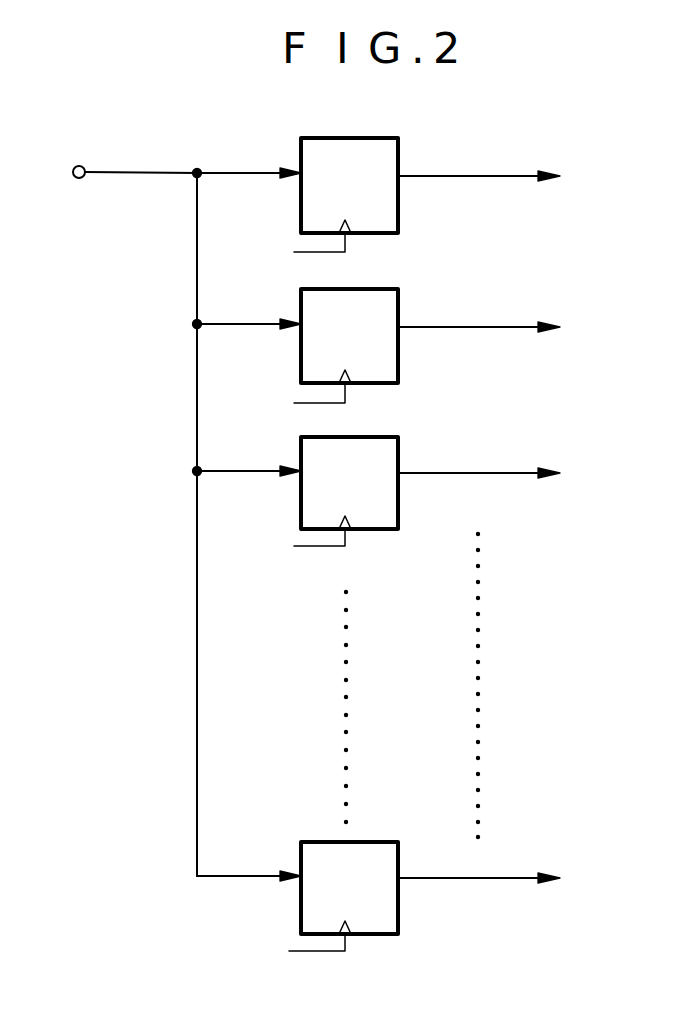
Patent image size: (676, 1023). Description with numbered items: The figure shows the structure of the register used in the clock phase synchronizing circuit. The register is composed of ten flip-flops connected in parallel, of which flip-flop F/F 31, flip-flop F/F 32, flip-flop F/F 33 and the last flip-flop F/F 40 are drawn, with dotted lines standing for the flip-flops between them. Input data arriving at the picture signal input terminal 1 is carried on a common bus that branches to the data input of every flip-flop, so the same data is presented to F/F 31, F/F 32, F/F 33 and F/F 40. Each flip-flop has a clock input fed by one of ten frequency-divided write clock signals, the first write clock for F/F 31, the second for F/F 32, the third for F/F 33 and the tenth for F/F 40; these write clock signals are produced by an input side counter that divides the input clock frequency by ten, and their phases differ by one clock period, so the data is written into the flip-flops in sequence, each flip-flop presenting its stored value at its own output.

The picture signal input terminal 1 is at (84, 165).
The flip-flop F/F 31 is at (367, 137).
The flip-flop F/F 32 is at (388, 288).
The flip-flop F/F 33 is at (388, 436).
The flip-flop F/F 40 is at (380, 841).